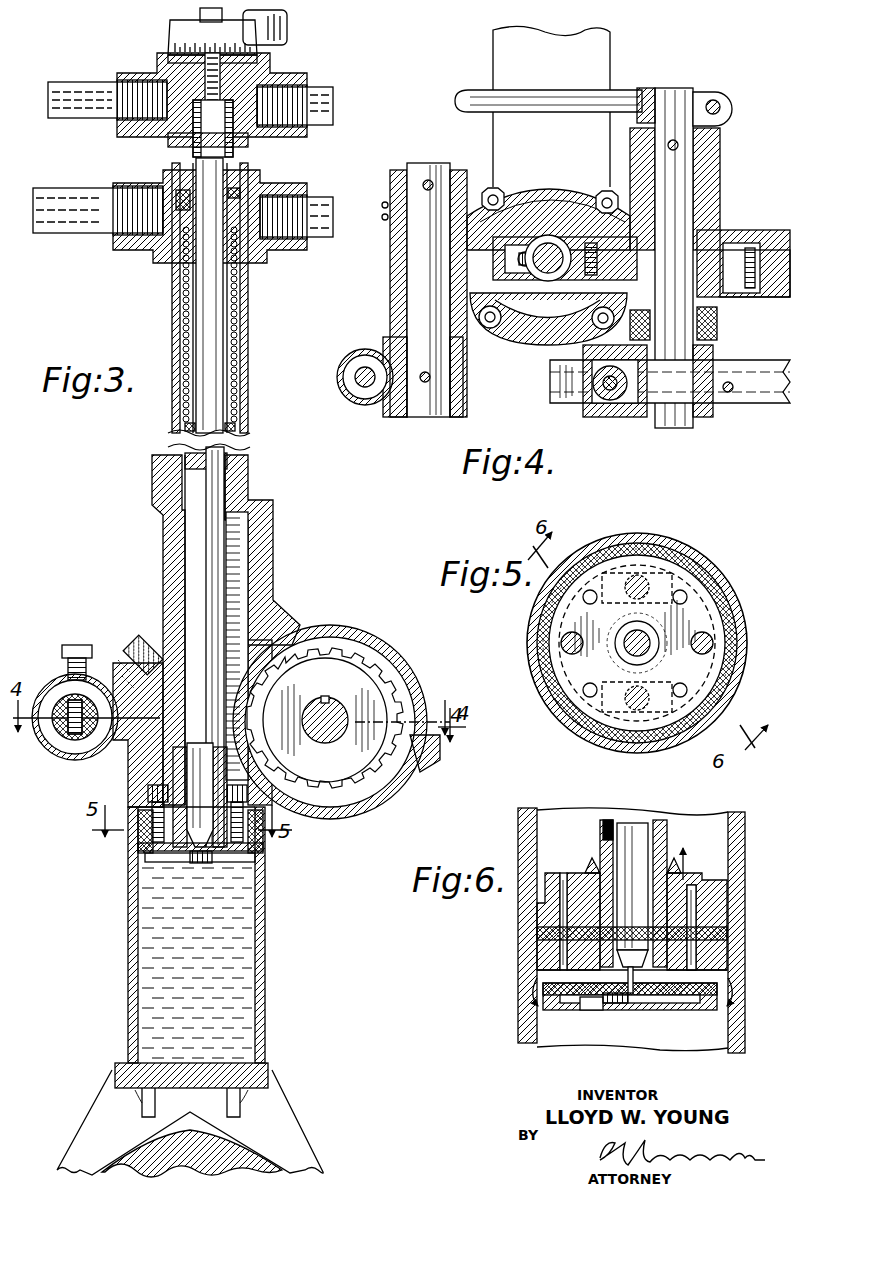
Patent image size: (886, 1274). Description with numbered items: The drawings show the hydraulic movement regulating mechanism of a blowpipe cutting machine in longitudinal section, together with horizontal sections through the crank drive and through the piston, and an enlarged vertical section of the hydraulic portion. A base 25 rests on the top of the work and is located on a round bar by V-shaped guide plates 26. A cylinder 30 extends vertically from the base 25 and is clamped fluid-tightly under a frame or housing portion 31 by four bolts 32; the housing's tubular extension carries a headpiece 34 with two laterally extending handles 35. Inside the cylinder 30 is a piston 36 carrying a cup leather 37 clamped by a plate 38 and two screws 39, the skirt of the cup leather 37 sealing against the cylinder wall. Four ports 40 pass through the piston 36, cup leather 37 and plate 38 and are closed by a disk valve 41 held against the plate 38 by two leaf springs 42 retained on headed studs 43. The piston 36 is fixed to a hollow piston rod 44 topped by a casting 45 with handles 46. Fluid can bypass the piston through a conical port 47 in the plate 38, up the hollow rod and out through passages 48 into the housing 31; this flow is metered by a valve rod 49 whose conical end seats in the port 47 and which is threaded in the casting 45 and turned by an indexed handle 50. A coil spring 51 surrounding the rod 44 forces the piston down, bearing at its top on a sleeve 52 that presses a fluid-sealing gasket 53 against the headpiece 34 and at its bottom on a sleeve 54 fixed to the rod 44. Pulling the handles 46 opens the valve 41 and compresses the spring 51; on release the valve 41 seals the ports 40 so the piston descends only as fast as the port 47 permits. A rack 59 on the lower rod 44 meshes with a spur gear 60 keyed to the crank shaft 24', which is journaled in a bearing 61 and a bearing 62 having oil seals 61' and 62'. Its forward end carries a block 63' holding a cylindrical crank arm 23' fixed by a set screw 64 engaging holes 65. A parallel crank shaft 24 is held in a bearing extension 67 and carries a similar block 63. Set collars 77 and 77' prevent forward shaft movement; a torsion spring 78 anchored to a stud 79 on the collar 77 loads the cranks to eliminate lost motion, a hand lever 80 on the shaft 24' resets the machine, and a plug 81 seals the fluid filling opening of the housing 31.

In FIG. 4, the crank arm 23' is at (670, 410).
In FIG. 3, the crank shaft 24 is at (75, 744).
In FIG. 4, the crank shaft 24 is at (396, 290).
In FIG. 3, the crank shaft 24' is at (325, 718).
In FIG. 4, the crank shaft 24' is at (711, 258).
In FIG. 3, the base 25 is at (272, 1080).
In FIG. 3, the guide plates 26 is at (97, 1120).
In FIG. 3, the cylinder 30 is at (265, 970).
In FIG. 5, the cylinder 30 is at (570, 722).
In FIG. 6, the cylinder 30 is at (730, 943).
In FIG. 3, the frame or housing portion 31 is at (165, 590).
In FIG. 4, the frame or housing portion 31 is at (545, 215).
In FIG. 4, the bolts 32 is at (492, 330).
In FIG. 3, the headpiece 34 is at (290, 195).
In FIG. 3, the handles 35 is at (62, 228).
In FIG. 3, the piston 36 is at (135, 825).
In FIG. 6, the piston 36 is at (540, 912).
In FIG. 3, the cup leather 37 is at (150, 850).
In FIG. 5, the cup leather 37 is at (608, 548).
In FIG. 6, the cup leather 37 is at (540, 940).
In FIG. 5, the plate 38 is at (575, 667).
In FIG. 6, the plate 38 is at (545, 952).
In FIG. 3, the screws 39 is at (262, 850).
In FIG. 5, the screws 39 is at (565, 642).
In FIG. 5, the ports 40 is at (585, 598).
In FIG. 6, the ports 40 is at (565, 880).
In FIG. 3, the disk valve 41 is at (142, 900).
In FIG. 6, the disk valve 41 is at (675, 992).
In FIG. 3, the leaf springs 42 is at (215, 860).
In FIG. 5, the leaf springs 42 is at (695, 555).
In FIG. 6, the leaf springs 42 is at (612, 1010).
In FIG. 5, the headed studs 43 is at (645, 575).
In FIG. 6, the headed studs 43 is at (586, 1010).
In FIG. 3, the hollow piston rod 44 is at (218, 480).
In FIG. 4, the hollow piston rod 44 is at (548, 275).
In FIG. 6, the hollow piston rod 44 is at (662, 825).
In FIG. 3, the casting 45 is at (295, 80).
In FIG. 3, the handles 46 is at (68, 92).
In FIG. 6, the conical port 47 is at (631, 972).
In FIG. 6, the passages 48 is at (600, 835).
In FIG. 3, the valve rod 49 is at (200, 748).
In FIG. 5, the valve rod 49 is at (630, 638).
In FIG. 6, the valve rod 49 is at (630, 835).
In FIG. 3, the handle 50 is at (288, 33).
In FIG. 3, the coil spring 51 is at (248, 345).
In FIG. 3, the sleeve 52 is at (178, 198).
In FIG. 3, the fluid-sealing gasket 53 is at (240, 198).
In FIG. 3, the sleeve 54 is at (248, 408).
In FIG. 3, the rack 59 is at (242, 535).
In FIG. 4, the rack 59 is at (585, 240).
In FIG. 3, the spur gear 60 is at (352, 647).
In FIG. 4, the spur gear 60 is at (727, 238).
In FIG. 4, the bearing 61 is at (738, 323).
In FIG. 4, the oil seal 61' is at (708, 333).
In FIG. 4, the bearing 62 is at (743, 236).
In FIG. 4, the oil seal 62' is at (550, 178).
In FIG. 4, the block 63 is at (423, 397).
In FIG. 4, the block 63' is at (627, 407).
In FIG. 4, the set screw 64 is at (365, 392).
In FIG. 4, the holes 65 is at (728, 393).
In FIG. 4, the bearing extension 67 is at (392, 288).
In FIG. 4, the set collar 77 is at (388, 278).
In FIG. 4, the set collar 77' is at (714, 185).
In FIG. 3, the torsion spring 78 is at (55, 745).
In FIG. 4, the torsion spring 78 is at (384, 220).
In FIG. 3, the stud 79 is at (70, 643).
In FIG. 4, the stud 79 is at (430, 180).
In FIG. 4, the hand lever 80 is at (470, 95).
In FIG. 3, the plug 81 is at (140, 650).